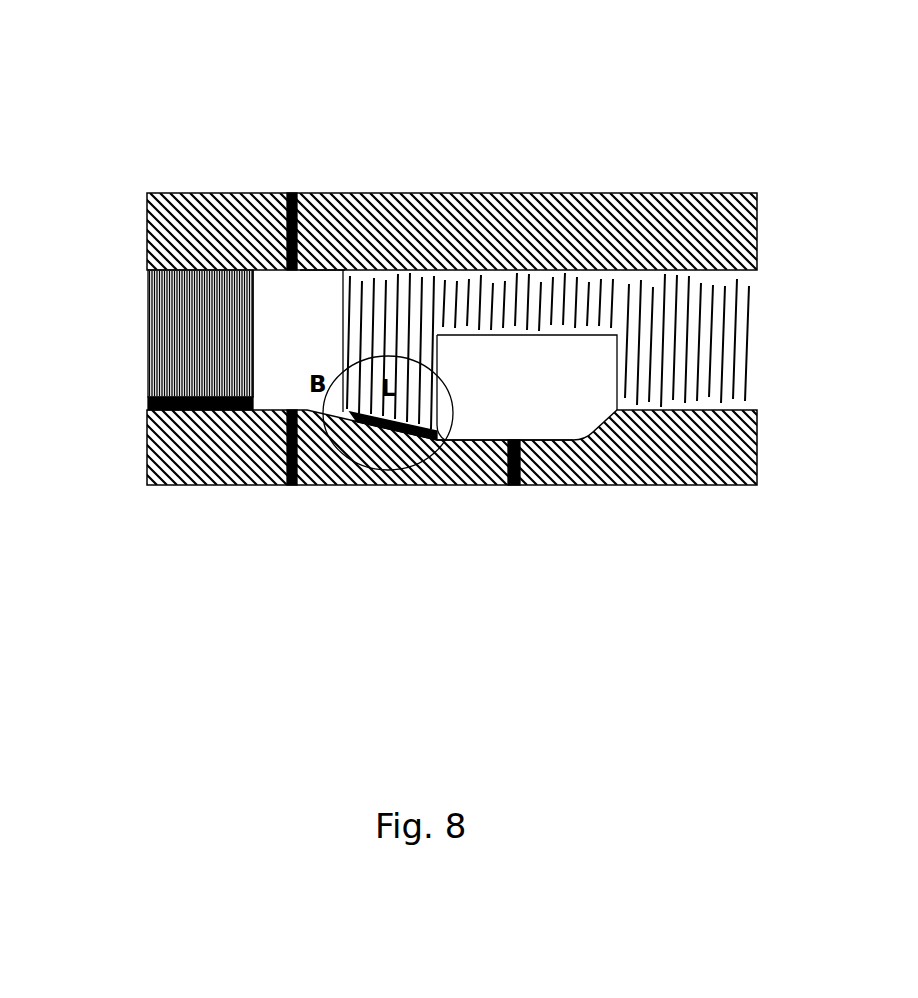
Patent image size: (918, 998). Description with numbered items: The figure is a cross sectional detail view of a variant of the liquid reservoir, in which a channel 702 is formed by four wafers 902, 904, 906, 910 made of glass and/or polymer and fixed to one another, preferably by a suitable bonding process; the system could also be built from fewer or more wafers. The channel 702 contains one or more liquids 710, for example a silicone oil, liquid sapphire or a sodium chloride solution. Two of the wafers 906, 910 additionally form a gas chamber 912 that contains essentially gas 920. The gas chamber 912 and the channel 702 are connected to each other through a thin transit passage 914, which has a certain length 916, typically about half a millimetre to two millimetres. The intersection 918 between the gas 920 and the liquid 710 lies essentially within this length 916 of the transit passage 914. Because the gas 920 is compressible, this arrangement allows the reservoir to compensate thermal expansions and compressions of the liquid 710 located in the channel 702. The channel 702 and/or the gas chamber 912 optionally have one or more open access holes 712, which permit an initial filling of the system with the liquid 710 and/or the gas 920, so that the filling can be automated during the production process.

The channel 702 is at (388, 150).
The liquid 710 is at (250, 205).
The open access hole 712 is at (286, 356).
The wafer 902 is at (448, 161).
The wafer 904 is at (152, 319).
The wafer 906 is at (569, 229).
The wafer 910 is at (449, 532).
The gas chamber 912 is at (501, 543).
The thin transit passage 914 is at (375, 489).
The length 916 is at (399, 534).
The intersection 918 is at (305, 532).
The gas 920 is at (527, 508).